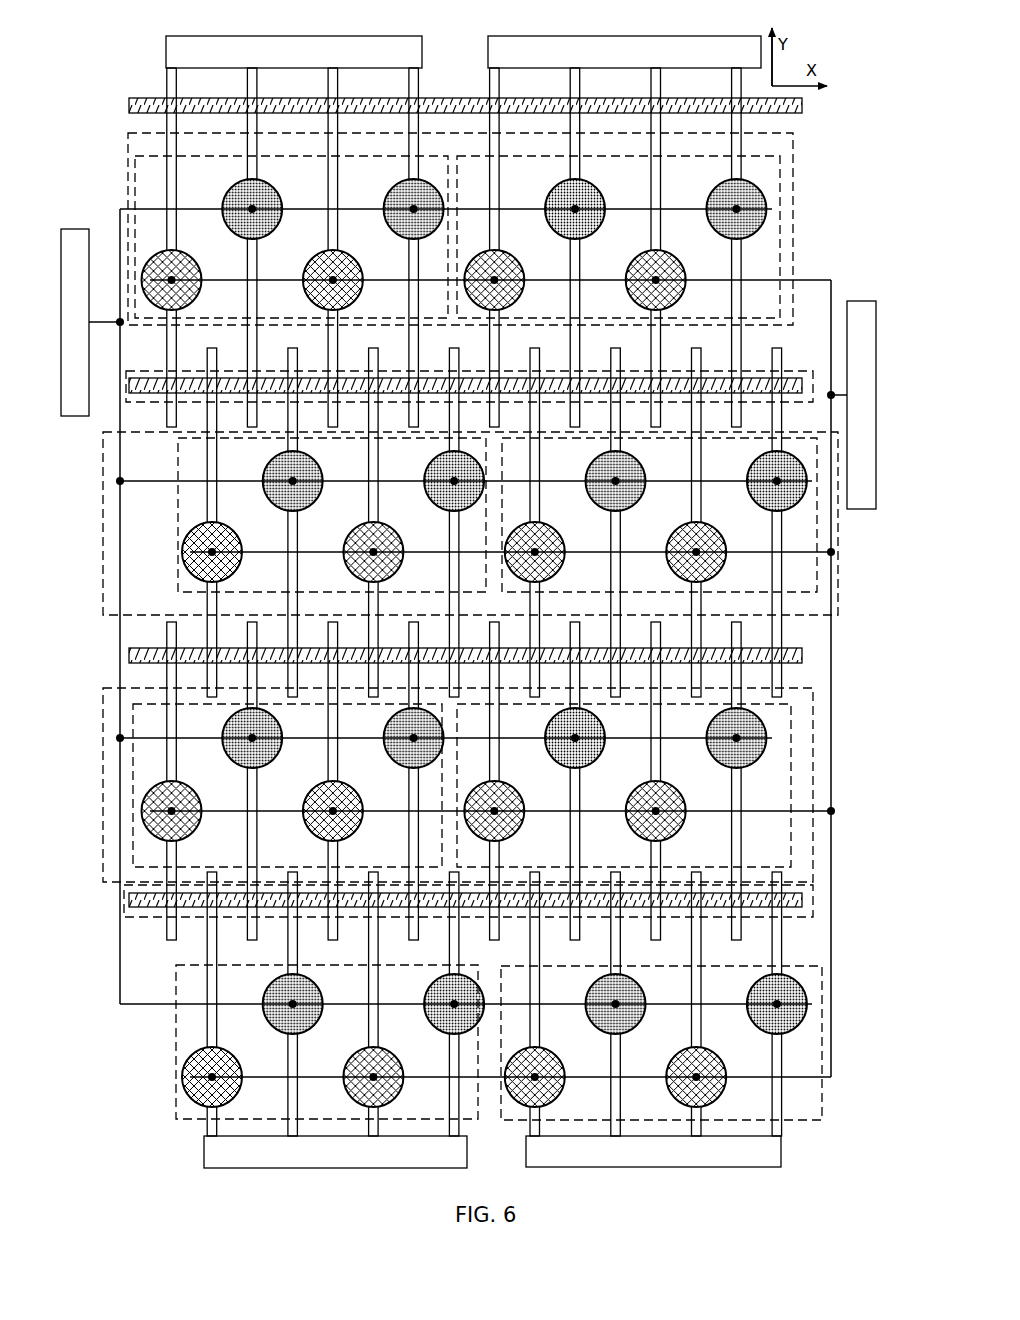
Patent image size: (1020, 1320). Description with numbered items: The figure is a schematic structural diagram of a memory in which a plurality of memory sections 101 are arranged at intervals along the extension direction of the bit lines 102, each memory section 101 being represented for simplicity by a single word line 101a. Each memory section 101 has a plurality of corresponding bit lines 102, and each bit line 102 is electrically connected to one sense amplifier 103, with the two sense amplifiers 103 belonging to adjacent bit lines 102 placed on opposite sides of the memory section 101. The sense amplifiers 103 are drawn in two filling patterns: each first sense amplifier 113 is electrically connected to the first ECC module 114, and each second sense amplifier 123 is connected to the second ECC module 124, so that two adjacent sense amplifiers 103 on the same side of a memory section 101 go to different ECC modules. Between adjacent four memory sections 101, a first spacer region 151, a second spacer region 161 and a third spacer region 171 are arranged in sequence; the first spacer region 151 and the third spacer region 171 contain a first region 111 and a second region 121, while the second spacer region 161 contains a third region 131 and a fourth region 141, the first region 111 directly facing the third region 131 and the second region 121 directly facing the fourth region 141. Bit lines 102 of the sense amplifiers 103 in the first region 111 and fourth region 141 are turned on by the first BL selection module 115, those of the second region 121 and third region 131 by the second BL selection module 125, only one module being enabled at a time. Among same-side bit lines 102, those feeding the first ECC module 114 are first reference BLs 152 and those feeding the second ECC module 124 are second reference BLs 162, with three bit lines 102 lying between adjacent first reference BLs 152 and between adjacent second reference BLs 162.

The memory section 101 is at (138, 404).
The word line 101a is at (167, 386).
The bit line 102 is at (252, 313).
The sense amplifier 103 is at (751, 244).
The first region 111 is at (196, 154).
The first sense amplifier 113 is at (772, 212).
The first ECC module 114 is at (75, 229).
The first BL selection module 115 is at (166, 50).
The second region 121 is at (520, 154).
The second sense amplifier 123 is at (662, 270).
The second ECC module 124 is at (861, 301).
The second BL selection module 125 is at (488, 50).
The third region 131 is at (196, 594).
The fourth region 141 is at (522, 594).
The first spacer region 151 is at (126, 147).
The first reference BL 152 is at (252, 363).
The second spacer region 161 is at (101, 495).
The second reference BL 162 is at (170, 363).
The third spacer region 171 is at (101, 740).